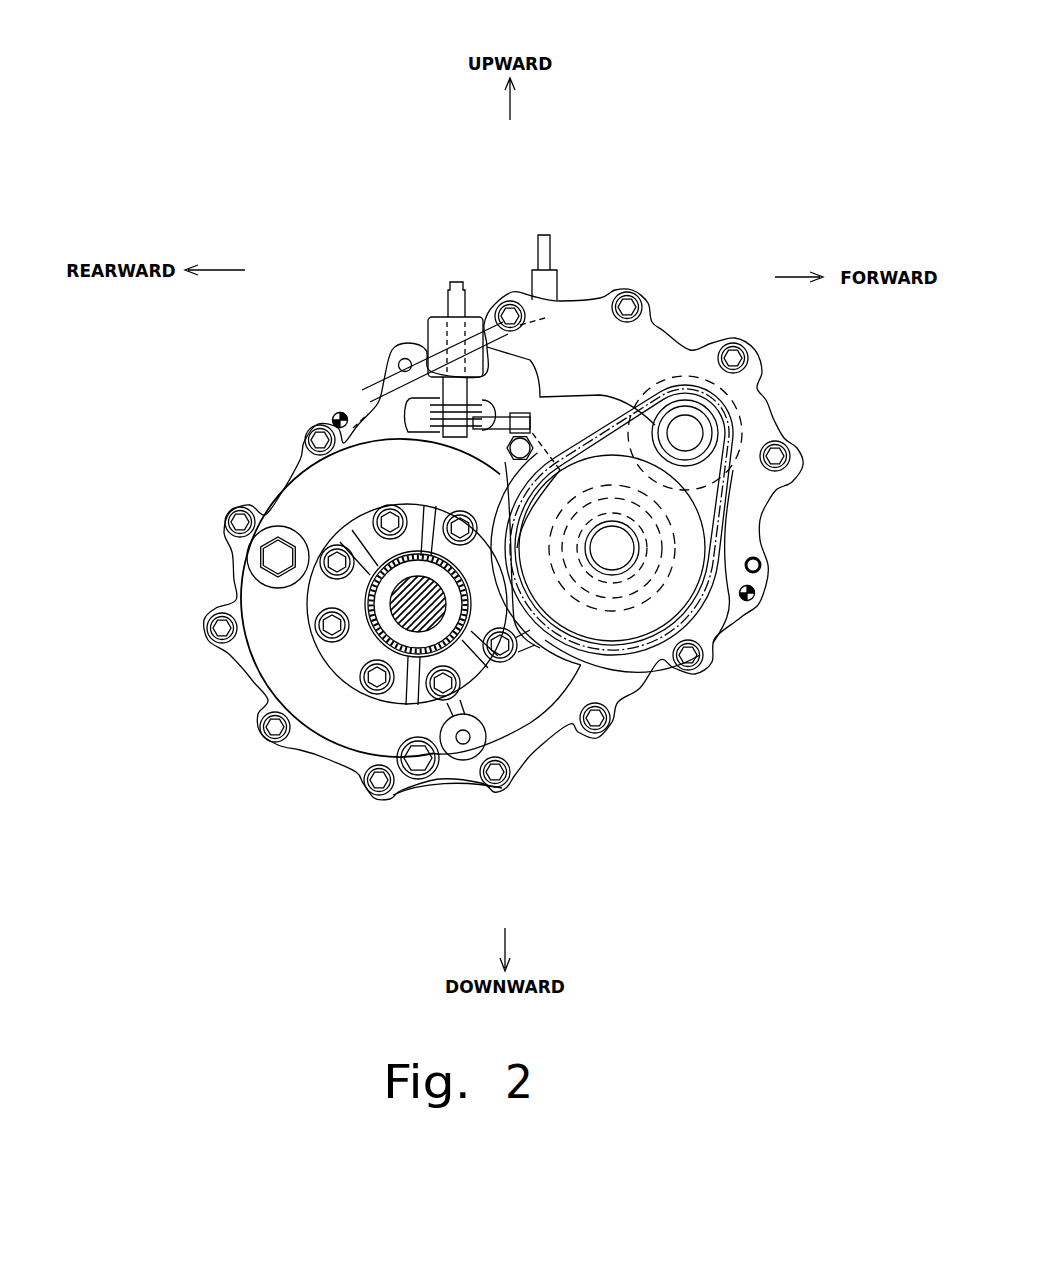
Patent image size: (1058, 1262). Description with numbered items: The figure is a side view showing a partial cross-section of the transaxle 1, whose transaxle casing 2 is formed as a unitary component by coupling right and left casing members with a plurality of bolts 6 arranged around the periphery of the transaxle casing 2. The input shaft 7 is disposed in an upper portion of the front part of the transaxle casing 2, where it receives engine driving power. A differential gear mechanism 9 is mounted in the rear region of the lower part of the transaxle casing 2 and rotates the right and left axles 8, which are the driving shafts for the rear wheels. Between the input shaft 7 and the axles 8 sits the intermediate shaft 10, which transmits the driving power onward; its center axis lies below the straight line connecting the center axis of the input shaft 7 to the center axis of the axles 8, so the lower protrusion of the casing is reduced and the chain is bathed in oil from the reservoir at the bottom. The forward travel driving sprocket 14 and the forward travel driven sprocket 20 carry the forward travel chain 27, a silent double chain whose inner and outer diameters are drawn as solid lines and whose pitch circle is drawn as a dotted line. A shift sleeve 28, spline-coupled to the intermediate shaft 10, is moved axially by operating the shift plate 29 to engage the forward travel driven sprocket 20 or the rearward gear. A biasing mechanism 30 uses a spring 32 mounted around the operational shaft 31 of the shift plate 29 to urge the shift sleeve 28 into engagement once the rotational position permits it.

The transaxle 1 is at (438, 116).
The transaxle casing 2 is at (258, 474).
The bolts 6 is at (498, 788).
The input shaft 7 is at (690, 440).
The axles 8 is at (402, 630).
The differential gear mechanism 9 is at (333, 597).
The intermediate shaft 10 is at (613, 552).
The forward travel driving sprocket 14 is at (733, 476).
The forward travel driven sprocket 20 is at (647, 613).
The forward travel chain 27 is at (623, 618).
The shift sleeve 28 is at (673, 562).
The shift plate 29 is at (520, 513).
The biasing mechanism 30 is at (406, 428).
The operational shaft 31 is at (490, 300).
The spring 32 is at (500, 553).